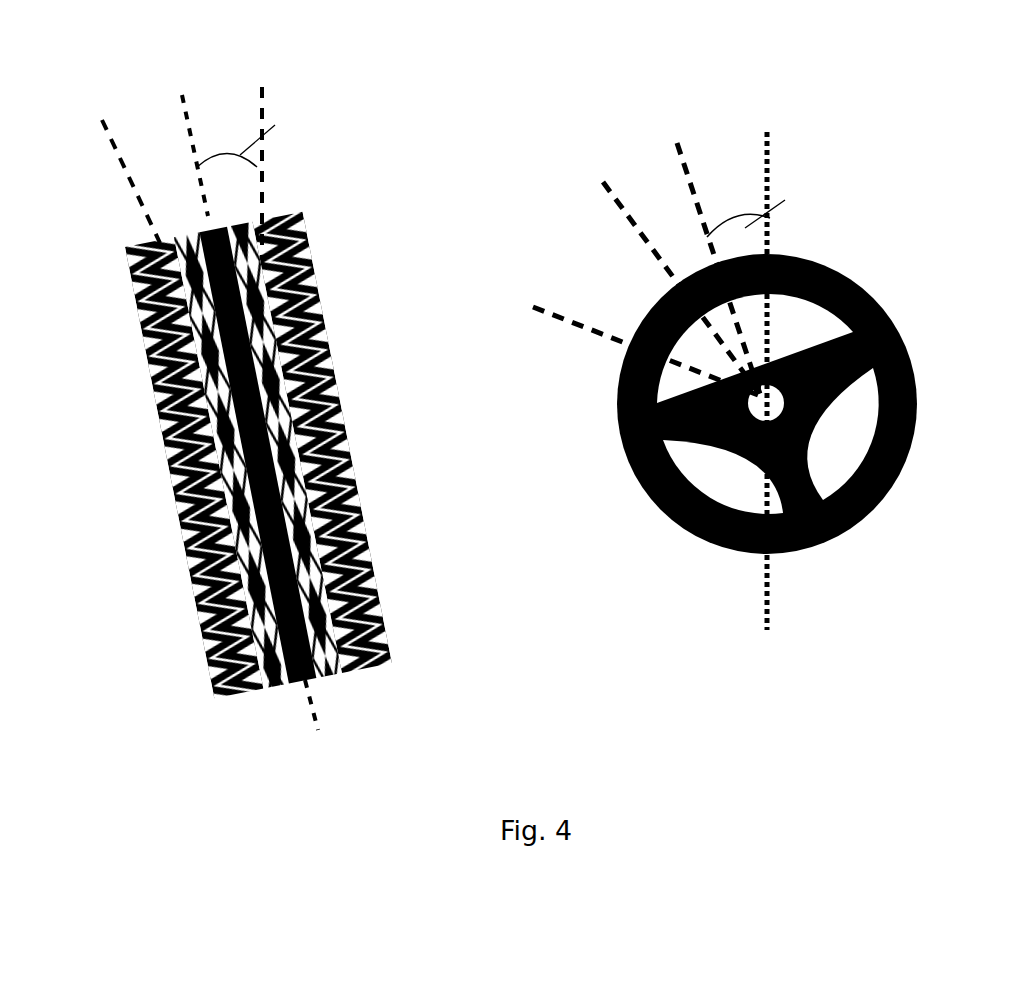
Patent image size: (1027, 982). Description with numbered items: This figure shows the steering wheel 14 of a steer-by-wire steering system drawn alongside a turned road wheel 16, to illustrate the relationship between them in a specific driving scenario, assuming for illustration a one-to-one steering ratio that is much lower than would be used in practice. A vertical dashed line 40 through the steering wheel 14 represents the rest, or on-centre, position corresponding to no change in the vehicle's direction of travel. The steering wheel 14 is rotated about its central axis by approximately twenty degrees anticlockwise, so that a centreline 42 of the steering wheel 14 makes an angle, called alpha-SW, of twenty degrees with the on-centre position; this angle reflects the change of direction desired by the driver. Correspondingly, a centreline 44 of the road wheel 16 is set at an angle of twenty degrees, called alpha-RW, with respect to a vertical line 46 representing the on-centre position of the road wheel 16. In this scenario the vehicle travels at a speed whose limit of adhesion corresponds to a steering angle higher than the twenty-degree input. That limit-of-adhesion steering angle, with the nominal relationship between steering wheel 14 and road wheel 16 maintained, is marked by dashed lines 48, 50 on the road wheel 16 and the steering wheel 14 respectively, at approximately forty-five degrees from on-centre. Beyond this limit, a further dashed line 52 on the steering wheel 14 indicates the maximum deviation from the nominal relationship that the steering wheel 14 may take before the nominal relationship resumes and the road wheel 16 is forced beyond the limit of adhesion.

The steering wheel 14 is at (643, 485).
The road wheel 16 is at (320, 373).
The vertical dashed line 40 is at (767, 153).
The centreline of the steering wheel 42 is at (693, 185).
The centreline of the road wheel 44 is at (187, 110).
The vertical line 46 is at (262, 112).
The dashed line 48 is at (117, 147).
The dashed line 50 is at (618, 207).
The further dashed line 52 is at (545, 305).